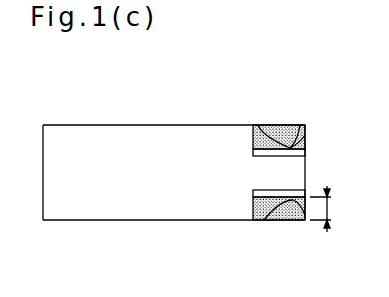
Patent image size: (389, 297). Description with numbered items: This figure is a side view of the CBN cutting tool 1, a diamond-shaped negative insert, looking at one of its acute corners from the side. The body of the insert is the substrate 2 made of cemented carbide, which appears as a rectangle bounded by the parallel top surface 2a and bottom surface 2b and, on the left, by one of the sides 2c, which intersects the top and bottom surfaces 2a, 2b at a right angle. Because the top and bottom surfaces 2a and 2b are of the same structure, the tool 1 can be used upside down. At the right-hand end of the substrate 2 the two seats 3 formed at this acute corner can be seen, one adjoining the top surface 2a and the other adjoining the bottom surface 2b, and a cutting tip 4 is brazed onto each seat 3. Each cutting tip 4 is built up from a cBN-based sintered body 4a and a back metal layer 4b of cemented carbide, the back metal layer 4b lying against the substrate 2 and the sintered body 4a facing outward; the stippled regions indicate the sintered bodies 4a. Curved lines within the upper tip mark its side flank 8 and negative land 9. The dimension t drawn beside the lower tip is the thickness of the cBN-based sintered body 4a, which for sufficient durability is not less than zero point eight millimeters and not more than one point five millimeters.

The CBN cutting tool 1 is at (183, 107).
The substrate 2 is at (190, 210).
The top surface 2a is at (106, 123).
The bottom surface 2b is at (127, 221).
The side 2c is at (73, 187).
The seat 3 is at (306, 142).
The cutting tip 4 is at (272, 222).
The cBN-based sintered body 4a is at (252, 137).
The back metal layer 4b is at (252, 152).
The side flank 8 is at (258, 125).
The negative land 9 is at (300, 125).
The thickness t is at (327, 209).